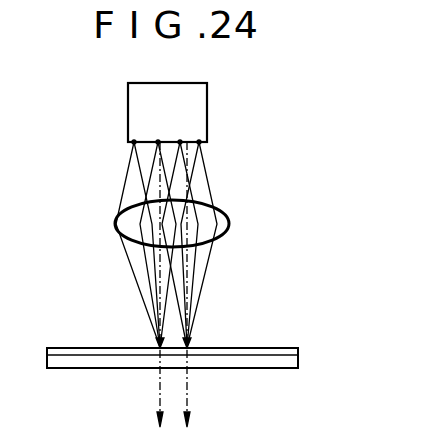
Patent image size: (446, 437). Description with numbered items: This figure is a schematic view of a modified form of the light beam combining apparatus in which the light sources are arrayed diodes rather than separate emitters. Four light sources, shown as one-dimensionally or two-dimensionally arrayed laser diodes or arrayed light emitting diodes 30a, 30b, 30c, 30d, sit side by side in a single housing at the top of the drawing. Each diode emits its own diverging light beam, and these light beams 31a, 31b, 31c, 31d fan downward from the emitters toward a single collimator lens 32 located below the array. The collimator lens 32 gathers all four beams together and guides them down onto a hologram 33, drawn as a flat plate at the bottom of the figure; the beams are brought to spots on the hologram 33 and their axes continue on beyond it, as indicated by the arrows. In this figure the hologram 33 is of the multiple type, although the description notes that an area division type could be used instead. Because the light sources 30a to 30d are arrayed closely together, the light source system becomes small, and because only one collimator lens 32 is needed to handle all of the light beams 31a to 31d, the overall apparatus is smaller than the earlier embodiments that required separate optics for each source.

The arrayed laser diode or light emitting diode 30a is at (133, 142).
The arrayed laser diode or light emitting diode 30b is at (153, 147).
The arrayed laser diode or light emitting diode 30c is at (182, 141).
The arrayed laser diode or light emitting diode 30d is at (200, 141).
The light beam 31a is at (128, 188).
The light beam 31b is at (122, 205).
The light beam 31c is at (197, 168).
The light beam 31d is at (213, 197).
The collimator lens 32 is at (231, 224).
The hologram 33 is at (299, 358).